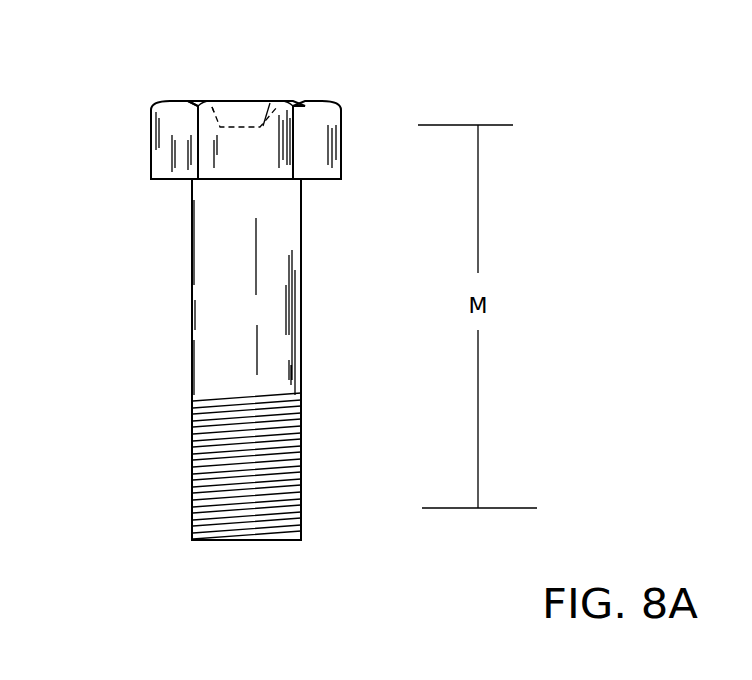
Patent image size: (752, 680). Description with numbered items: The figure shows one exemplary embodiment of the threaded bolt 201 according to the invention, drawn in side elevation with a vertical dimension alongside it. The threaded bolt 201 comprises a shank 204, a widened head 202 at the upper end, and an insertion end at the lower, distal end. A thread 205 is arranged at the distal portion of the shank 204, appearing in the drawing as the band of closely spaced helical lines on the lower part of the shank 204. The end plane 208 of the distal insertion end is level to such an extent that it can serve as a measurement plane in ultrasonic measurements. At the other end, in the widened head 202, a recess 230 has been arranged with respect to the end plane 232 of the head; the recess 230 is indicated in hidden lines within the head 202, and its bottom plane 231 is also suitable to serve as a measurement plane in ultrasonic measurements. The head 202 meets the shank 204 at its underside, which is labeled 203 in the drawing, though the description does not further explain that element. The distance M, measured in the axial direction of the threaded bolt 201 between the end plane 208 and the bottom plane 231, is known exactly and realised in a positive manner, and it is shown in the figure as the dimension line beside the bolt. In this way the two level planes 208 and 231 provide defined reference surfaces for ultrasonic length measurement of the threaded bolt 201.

The threaded bolt 201 is at (153, 348).
The widened head 202 is at (322, 123).
The head bottom face 203 is at (320, 168).
The shank 204 is at (285, 361).
The thread 205 is at (207, 498).
The end plane 208 is at (280, 540).
The recess 230 is at (243, 115).
The bottom plane 231 is at (278, 101).
The end plane 232 is at (212, 108).